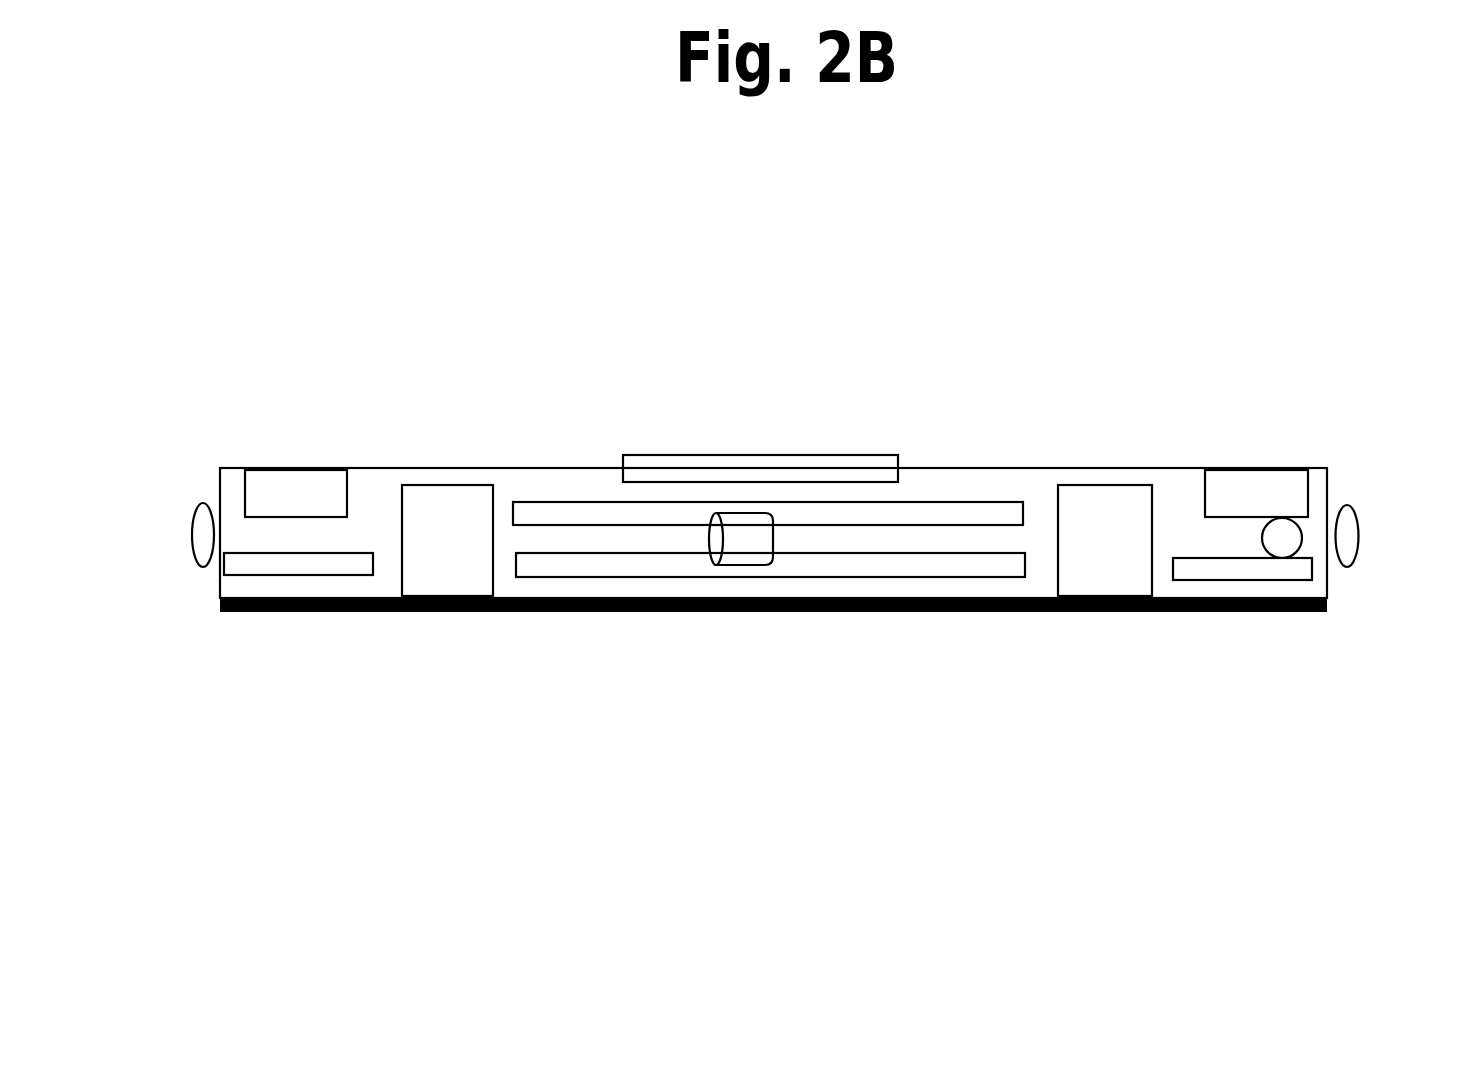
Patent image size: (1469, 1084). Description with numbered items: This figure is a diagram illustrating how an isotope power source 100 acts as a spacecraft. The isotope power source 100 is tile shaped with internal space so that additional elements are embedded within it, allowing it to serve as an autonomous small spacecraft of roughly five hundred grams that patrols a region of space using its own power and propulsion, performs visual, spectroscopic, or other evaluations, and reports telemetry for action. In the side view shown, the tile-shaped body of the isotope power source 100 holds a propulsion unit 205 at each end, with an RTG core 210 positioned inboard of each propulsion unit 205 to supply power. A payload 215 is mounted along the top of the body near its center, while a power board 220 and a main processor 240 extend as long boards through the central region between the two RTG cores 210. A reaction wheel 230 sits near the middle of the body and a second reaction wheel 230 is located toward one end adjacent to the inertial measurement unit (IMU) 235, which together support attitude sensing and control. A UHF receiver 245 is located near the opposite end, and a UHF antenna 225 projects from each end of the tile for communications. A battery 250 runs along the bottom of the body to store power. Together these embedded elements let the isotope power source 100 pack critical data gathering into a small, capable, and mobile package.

The isotope power source 100 is at (255, 124).
The propulsion unit 205 is at (1247, 460).
The RTG core 210 is at (1180, 317).
The payload 215 is at (692, 455).
The power board 220 is at (902, 495).
The UHF antenna 225 is at (195, 565).
The reaction wheel 230 is at (1402, 625).
The inertial measurement unit (IMU) 235 is at (1247, 582).
The main processor 240 is at (838, 577).
The UHF receiver 245 is at (317, 582).
The battery 250 is at (1133, 612).